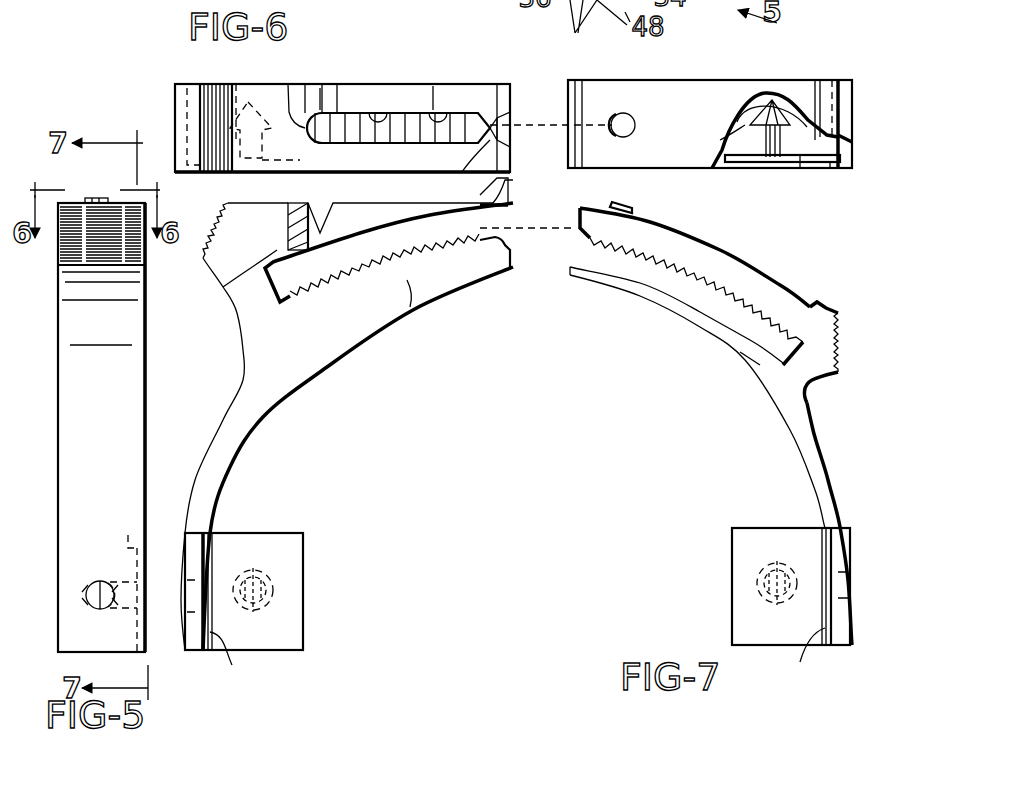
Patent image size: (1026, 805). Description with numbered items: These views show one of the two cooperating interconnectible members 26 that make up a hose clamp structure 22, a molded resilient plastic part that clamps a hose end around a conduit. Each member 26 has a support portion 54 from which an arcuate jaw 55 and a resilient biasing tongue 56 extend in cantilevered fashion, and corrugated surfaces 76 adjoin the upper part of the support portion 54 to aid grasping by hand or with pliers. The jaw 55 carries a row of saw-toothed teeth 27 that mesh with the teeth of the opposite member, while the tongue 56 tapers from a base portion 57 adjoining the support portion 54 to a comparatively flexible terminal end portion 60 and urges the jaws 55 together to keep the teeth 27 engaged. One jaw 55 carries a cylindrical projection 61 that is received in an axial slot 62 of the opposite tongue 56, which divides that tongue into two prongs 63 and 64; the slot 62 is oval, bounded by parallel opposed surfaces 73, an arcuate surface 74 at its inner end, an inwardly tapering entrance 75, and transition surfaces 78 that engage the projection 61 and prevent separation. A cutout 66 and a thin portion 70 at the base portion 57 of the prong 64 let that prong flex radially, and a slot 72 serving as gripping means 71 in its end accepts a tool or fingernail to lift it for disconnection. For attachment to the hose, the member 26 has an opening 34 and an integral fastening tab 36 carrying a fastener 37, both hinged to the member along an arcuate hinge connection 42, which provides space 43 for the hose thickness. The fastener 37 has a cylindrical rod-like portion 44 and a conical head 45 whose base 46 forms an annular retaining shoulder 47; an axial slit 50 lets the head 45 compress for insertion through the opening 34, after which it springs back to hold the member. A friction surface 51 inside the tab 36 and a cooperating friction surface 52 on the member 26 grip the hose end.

In FIG. 6, the hose clamp structure 22 is at (545, 82).
In FIG. 7, the hose clamp structure 22 is at (532, 285).
In FIG. 6, the interconnectible member 26 is at (200, 82).
In FIG. 5, the interconnectible member 26 is at (150, 365).
In FIG. 7, the interconnectible member 26 is at (268, 398).
In FIG. 7, the teeth 27 is at (441, 260).
In FIG. 5, the opening 34 is at (103, 581).
In FIG. 6, the fastening tab 36 is at (795, 192).
In FIG. 5, the fastening tab 36 is at (138, 525).
In FIG. 7, the fastening tab 36 is at (272, 534).
In FIG. 6, the fastener 37 is at (240, 98).
In FIG. 5, the fastener 37 is at (126, 606).
In FIG. 7, the fastener 37 is at (280, 585).
In FIG. 7, the arcuate hinge connection 42 is at (517, 659).
In FIG. 6, the space for hose end thickness 43 is at (838, 172).
In FIG. 6, the cylindrical rod-like portion 44 is at (768, 163).
In FIG. 6, the conical head 45 is at (748, 102).
In FIG. 6, the base 46 is at (738, 126).
In FIG. 6, the annular retaining shoulder 47 is at (728, 142).
In FIG. 6, the axial slit 50 is at (773, 98).
In FIG. 6, the friction surface 51 is at (800, 168).
In FIG. 6, the friction surface 52 is at (828, 84).
In FIG. 7, the support portion 54 is at (250, 297).
In FIG. 6, the arcuate jaw 55 is at (598, 88).
In FIG. 7, the arcuate jaw 55 is at (412, 308).
In FIG. 6, the resilient biasing tongue 56 is at (433, 84).
In FIG. 7, the resilient biasing tongue 56 is at (412, 213).
In FIG. 7, the base portion 57 is at (228, 292).
In FIG. 7, the terminal end portion 60 is at (396, 252).
In FIG. 6, the cylindrical projection 61 is at (633, 114).
In FIG. 5, the cylindrical projection 61 is at (96, 198).
In FIG. 7, the cylindrical projection 61 is at (628, 208).
In FIG. 6, the axial slot 62 is at (457, 100).
In FIG. 7, the prong 63 is at (352, 210).
In FIG. 6, the prong 64 is at (358, 100).
In FIG. 6, the cutout 66 is at (319, 84).
In FIG. 7, the cutout 66 is at (322, 228).
In FIG. 7, the thin portion 70 is at (338, 246).
In FIG. 7, the gripping means 71 is at (514, 201).
In FIG. 7, the slot 72 is at (510, 190).
In FIG. 6, the parallel opposed surfaces 73 is at (407, 141).
In FIG. 6, the arcuate surface 74 is at (292, 98).
In FIG. 6, the inwardly tapering entrance 75 is at (505, 125).
In FIG. 6, the corrugated surfaces 76 is at (212, 126).
In FIG. 5, the corrugated surfaces 76 is at (145, 248).
In FIG. 7, the corrugated surfaces 76 is at (215, 228).
In FIG. 7, the transition surfaces 78 is at (480, 205).